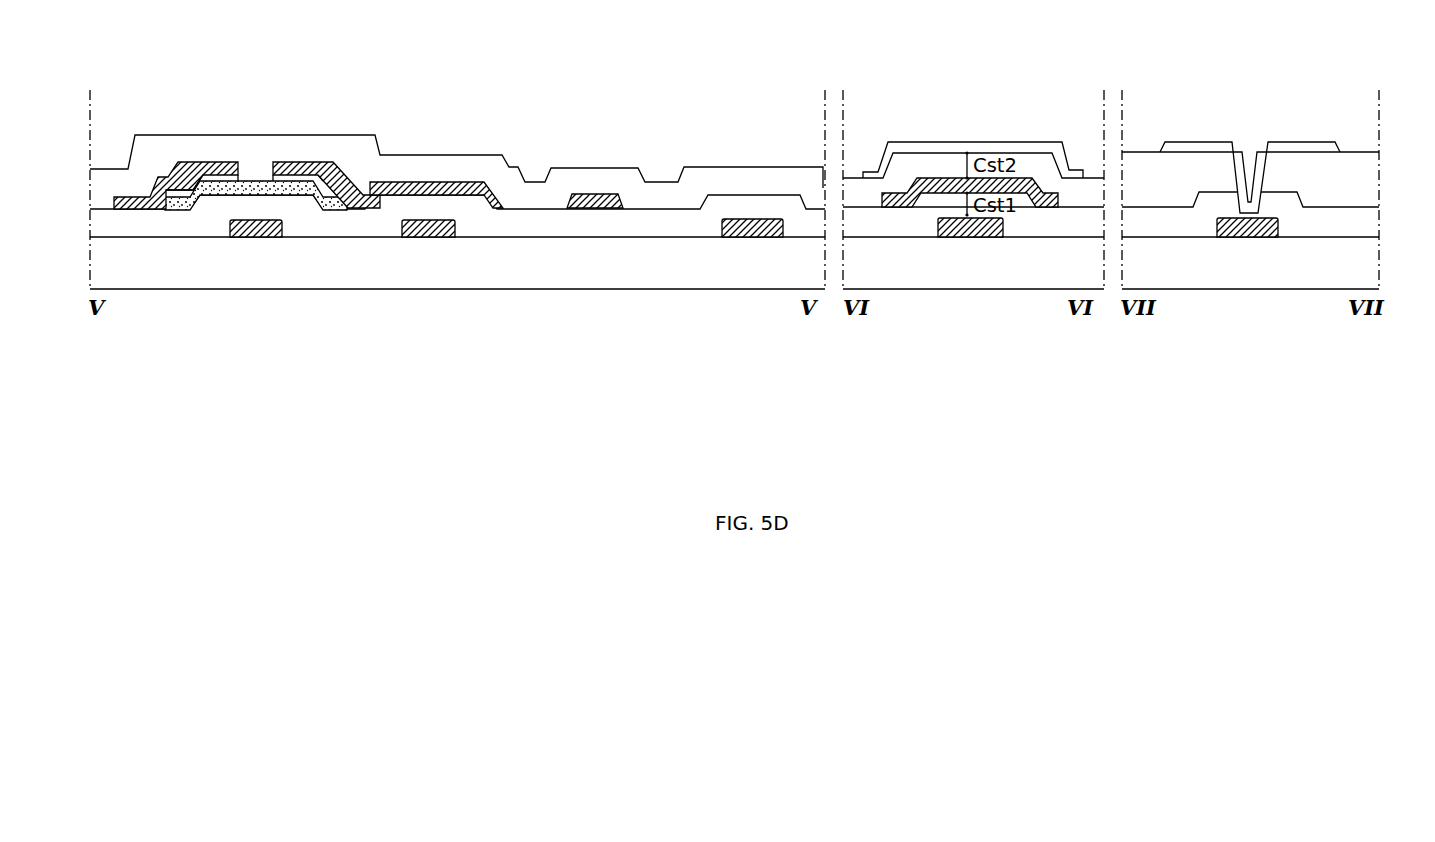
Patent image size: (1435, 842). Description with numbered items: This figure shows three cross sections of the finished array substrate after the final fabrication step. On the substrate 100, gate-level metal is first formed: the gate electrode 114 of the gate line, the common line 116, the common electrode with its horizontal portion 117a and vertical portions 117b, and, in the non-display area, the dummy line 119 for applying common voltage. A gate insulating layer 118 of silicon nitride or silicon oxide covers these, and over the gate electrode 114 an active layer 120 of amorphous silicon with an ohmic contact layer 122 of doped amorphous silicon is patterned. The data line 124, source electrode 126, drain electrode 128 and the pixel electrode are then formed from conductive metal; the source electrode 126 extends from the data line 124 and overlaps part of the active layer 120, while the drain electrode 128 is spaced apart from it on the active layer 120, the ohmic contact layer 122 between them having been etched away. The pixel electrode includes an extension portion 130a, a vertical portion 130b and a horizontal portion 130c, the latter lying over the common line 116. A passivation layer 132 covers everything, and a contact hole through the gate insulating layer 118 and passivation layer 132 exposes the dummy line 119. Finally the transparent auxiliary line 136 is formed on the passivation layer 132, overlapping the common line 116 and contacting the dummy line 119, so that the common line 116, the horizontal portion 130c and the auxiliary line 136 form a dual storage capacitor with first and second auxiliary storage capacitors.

The substrate 100 is at (477, 276).
The gate electrode 114 is at (255, 237).
The common line 116 is at (947, 237).
The horizontal portion 117a is at (427, 220).
The vertical portions 117b is at (757, 218).
The gate insulating layer 118 is at (868, 205).
The dummy line 119 is at (1223, 237).
The active layer 120 is at (257, 181).
The ohmic contact layer 122 is at (293, 162).
The data line 124 is at (127, 197).
The source electrode 126 is at (202, 163).
The drain electrode 128 is at (325, 162).
The extension portion 130a is at (465, 182).
The vertical portion 130b is at (615, 195).
The horizontal portion 130c is at (1023, 178).
The passivation layer 132 is at (577, 167).
The auxiliary line 136 is at (913, 142).